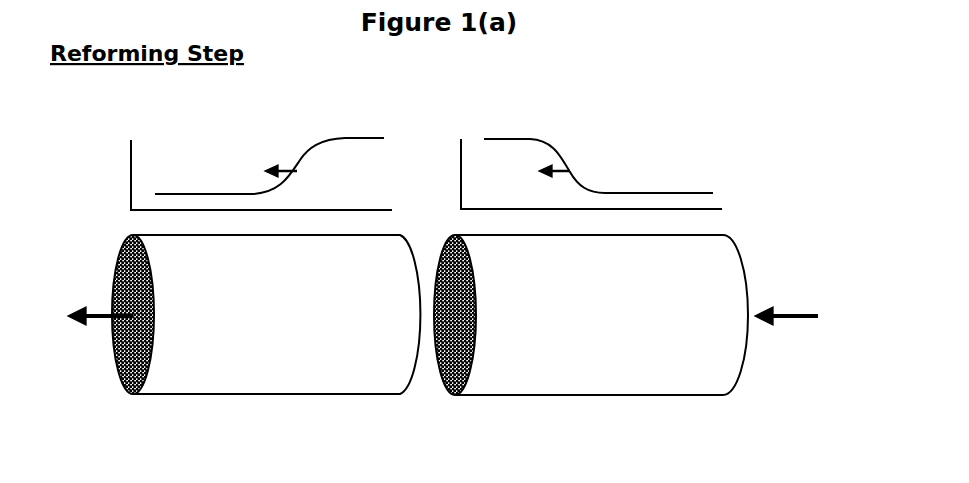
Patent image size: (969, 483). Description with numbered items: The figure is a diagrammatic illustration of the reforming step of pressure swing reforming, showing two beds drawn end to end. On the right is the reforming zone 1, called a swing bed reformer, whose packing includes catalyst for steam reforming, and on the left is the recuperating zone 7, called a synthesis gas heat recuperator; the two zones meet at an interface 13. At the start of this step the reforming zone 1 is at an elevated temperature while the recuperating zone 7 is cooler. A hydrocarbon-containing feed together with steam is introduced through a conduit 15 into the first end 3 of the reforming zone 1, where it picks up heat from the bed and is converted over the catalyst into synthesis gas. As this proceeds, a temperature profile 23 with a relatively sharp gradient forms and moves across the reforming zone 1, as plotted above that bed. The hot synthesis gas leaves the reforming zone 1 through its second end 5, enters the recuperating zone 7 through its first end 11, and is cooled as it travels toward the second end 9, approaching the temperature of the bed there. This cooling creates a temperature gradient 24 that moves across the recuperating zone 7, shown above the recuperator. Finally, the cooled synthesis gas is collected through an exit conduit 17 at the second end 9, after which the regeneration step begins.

The reforming zone 1 is at (617, 345).
The first end of the reforming zone 3 is at (742, 370).
The second end of the reforming zone 5 is at (458, 348).
The recuperating zone 7 is at (262, 358).
The second end of the recuperating zone 9 is at (135, 349).
The first end of the recuperating zone 11 is at (420, 362).
The interface 13 is at (428, 303).
The conduit 15 is at (785, 312).
The exit conduit 17 is at (101, 318).
The temperature profile 23 is at (563, 161).
The temperature gradient 24 is at (305, 152).